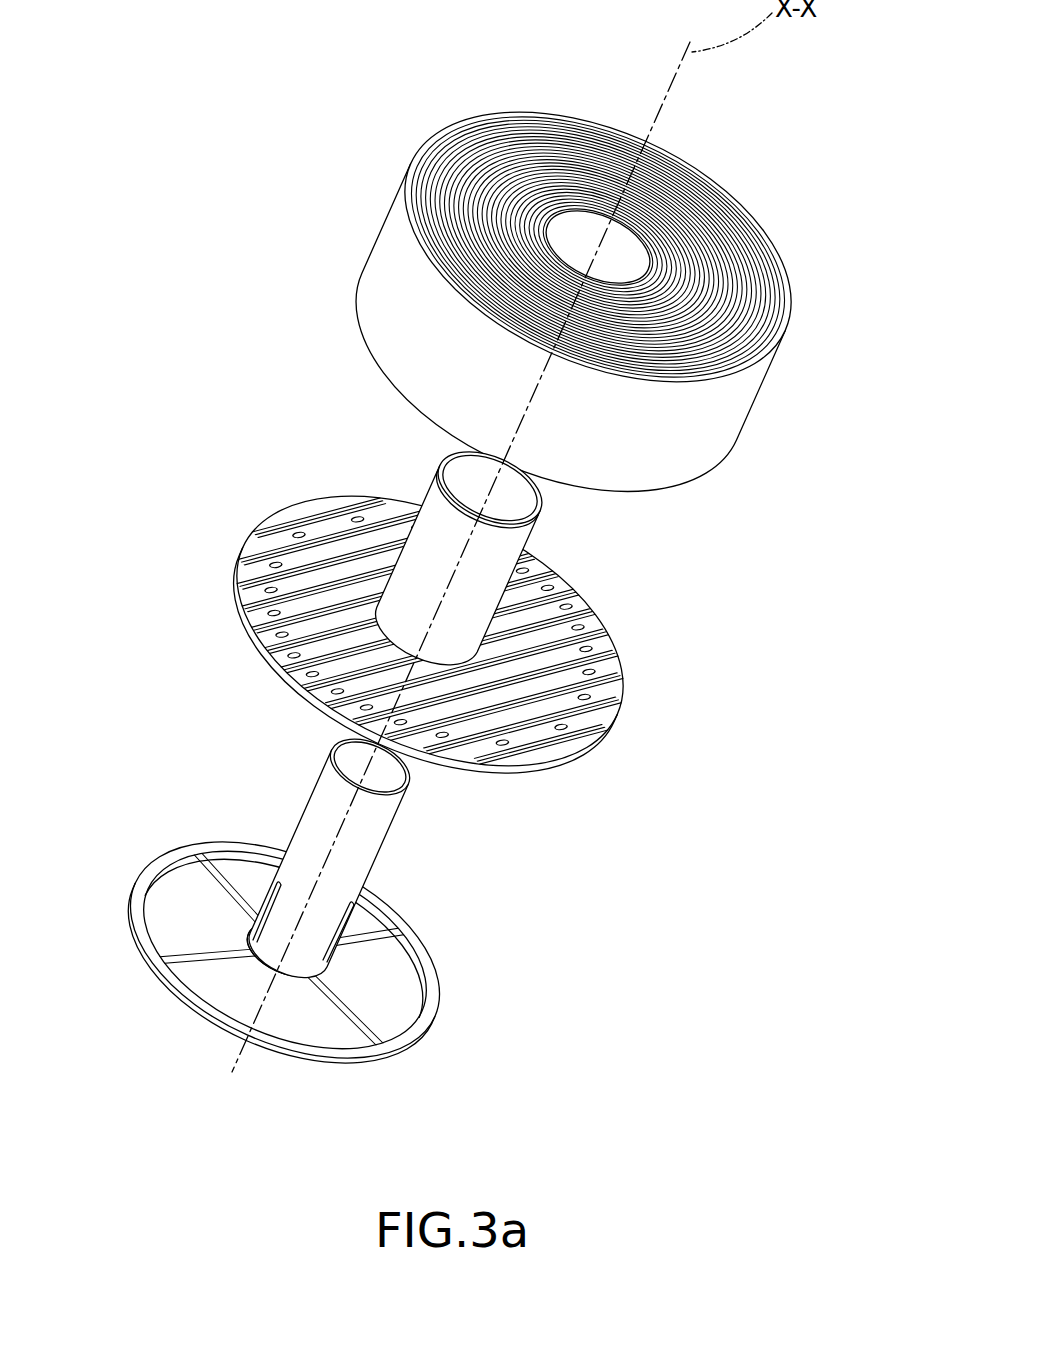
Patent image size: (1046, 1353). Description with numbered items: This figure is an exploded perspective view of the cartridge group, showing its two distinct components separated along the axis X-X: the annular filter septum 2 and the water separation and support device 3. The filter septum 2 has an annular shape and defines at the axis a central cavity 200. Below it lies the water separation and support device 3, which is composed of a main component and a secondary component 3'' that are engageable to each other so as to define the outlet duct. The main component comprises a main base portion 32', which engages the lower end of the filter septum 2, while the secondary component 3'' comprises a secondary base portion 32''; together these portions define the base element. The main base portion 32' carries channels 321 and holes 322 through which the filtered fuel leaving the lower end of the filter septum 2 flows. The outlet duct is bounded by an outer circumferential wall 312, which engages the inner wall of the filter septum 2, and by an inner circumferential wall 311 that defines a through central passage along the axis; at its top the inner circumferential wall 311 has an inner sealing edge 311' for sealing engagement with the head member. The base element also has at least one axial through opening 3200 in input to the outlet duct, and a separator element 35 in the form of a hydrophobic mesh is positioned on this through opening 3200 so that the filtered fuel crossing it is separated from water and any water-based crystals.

The filter septum 2 is at (525, 245).
The central cavity 200 is at (525, 132).
The water separation and support device 3 is at (465, 769).
The secondary component 3'' is at (373, 905).
The main base portion 32' is at (443, 656).
The secondary base portion 32'' is at (284, 966).
The inner circumferential wall 311 is at (263, 827).
The inner sealing edge 311' is at (253, 819).
The outer circumferential wall 312 is at (438, 468).
The channels 321 is at (562, 710).
The holes 322 is at (268, 637).
The through opening 3200 is at (277, 1007).
The separator element 35 is at (545, 1086).